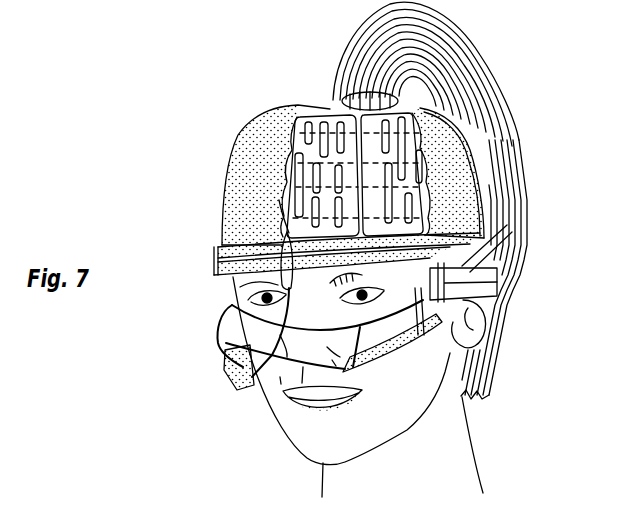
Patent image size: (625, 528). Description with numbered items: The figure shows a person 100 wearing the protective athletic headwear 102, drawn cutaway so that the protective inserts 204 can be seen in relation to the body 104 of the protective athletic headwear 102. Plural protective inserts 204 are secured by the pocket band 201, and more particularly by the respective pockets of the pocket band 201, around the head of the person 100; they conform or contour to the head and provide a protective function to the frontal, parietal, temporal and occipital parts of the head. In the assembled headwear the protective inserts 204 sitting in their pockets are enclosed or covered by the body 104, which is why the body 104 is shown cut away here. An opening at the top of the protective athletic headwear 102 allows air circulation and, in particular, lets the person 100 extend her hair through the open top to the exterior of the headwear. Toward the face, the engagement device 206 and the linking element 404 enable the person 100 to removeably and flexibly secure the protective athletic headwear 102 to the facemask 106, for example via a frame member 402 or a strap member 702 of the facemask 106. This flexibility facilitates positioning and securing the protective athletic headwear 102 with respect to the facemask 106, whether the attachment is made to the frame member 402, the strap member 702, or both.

The person 100 is at (474, 429).
The protective athletic headwear 102 is at (362, 203).
The body 104 is at (222, 207).
The facemask 106 is at (303, 311).
The pocket band 201 is at (510, 278).
The protective inserts 204 is at (320, 106).
The engagement device 206 is at (218, 247).
The frame member 402 is at (226, 372).
The linking element 404 is at (222, 288).
The strap member 702 is at (497, 264).